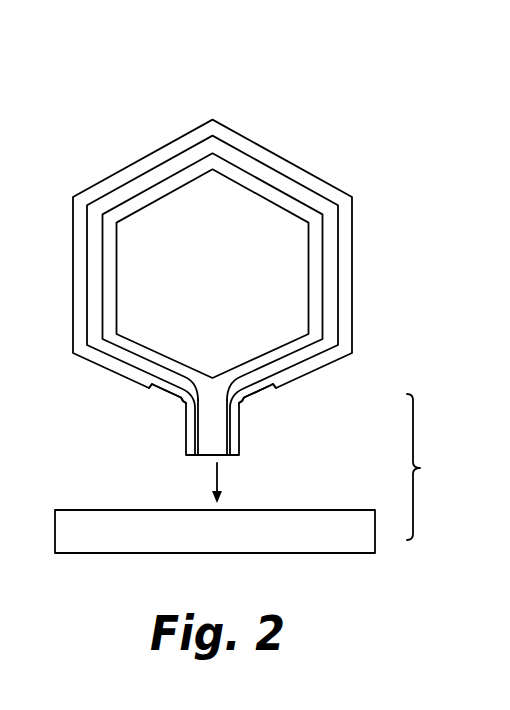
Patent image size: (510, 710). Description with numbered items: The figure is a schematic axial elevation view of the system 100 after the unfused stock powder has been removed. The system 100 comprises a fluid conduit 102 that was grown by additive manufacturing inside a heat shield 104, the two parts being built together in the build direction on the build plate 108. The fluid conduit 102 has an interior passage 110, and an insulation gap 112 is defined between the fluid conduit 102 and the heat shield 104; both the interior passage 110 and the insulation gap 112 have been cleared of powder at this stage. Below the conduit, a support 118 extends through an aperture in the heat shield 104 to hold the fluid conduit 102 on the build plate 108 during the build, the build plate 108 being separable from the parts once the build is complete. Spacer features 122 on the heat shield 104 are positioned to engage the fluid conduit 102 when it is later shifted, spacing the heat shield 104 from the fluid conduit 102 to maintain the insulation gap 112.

The system 100 is at (330, 123).
The fluid conduit 102 is at (176, 181).
The heat shield 104 is at (113, 181).
The build plate 108 is at (327, 540).
The interior passage 110 is at (237, 283).
The insulation gap 112 is at (332, 254).
The supports 118 is at (212, 437).
The spacer features 122 is at (170, 397).